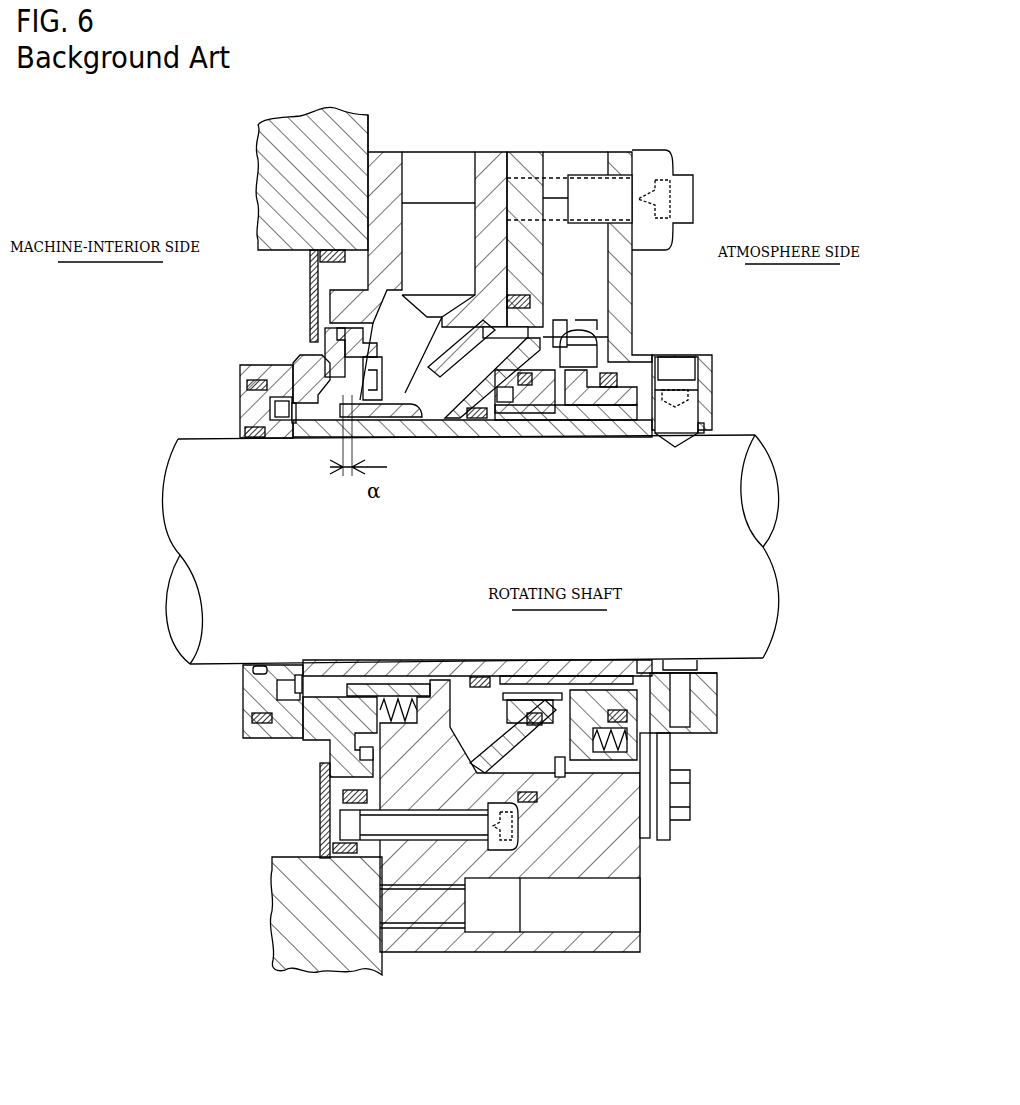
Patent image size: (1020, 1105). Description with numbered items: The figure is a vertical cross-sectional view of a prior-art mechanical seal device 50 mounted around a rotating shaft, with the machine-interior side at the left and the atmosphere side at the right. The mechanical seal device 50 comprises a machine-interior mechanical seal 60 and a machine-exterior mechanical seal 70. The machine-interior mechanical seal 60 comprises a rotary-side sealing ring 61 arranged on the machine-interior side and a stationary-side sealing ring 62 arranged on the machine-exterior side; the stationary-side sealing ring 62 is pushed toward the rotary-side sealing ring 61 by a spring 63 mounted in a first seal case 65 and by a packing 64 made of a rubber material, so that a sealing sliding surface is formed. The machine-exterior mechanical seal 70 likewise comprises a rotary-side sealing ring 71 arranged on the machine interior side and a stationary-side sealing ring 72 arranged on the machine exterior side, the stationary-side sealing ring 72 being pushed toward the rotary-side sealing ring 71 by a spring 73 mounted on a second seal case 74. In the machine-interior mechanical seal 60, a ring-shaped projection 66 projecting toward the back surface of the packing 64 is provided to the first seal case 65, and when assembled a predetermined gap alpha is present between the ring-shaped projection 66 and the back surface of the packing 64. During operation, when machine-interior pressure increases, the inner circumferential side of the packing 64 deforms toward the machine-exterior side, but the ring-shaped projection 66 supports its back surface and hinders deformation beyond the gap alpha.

The mechanical seal device 50 is at (725, 896).
The machine-interior mechanical seal 60 is at (298, 336).
The rotary-side sealing ring 61 is at (245, 364).
The stationary-side sealing ring 62 is at (328, 418).
The spring 63 is at (330, 758).
The packing 64 is at (297, 305).
The first seal case 65 is at (372, 165).
The ring-shaped projection 66 is at (400, 420).
The machine-exterior mechanical seal 70 is at (553, 350).
The rotary-side sealing ring 71 is at (548, 398).
The stationary-side sealing ring 72 is at (627, 395).
The spring 73 is at (630, 735).
The second seal case 74 is at (620, 150).